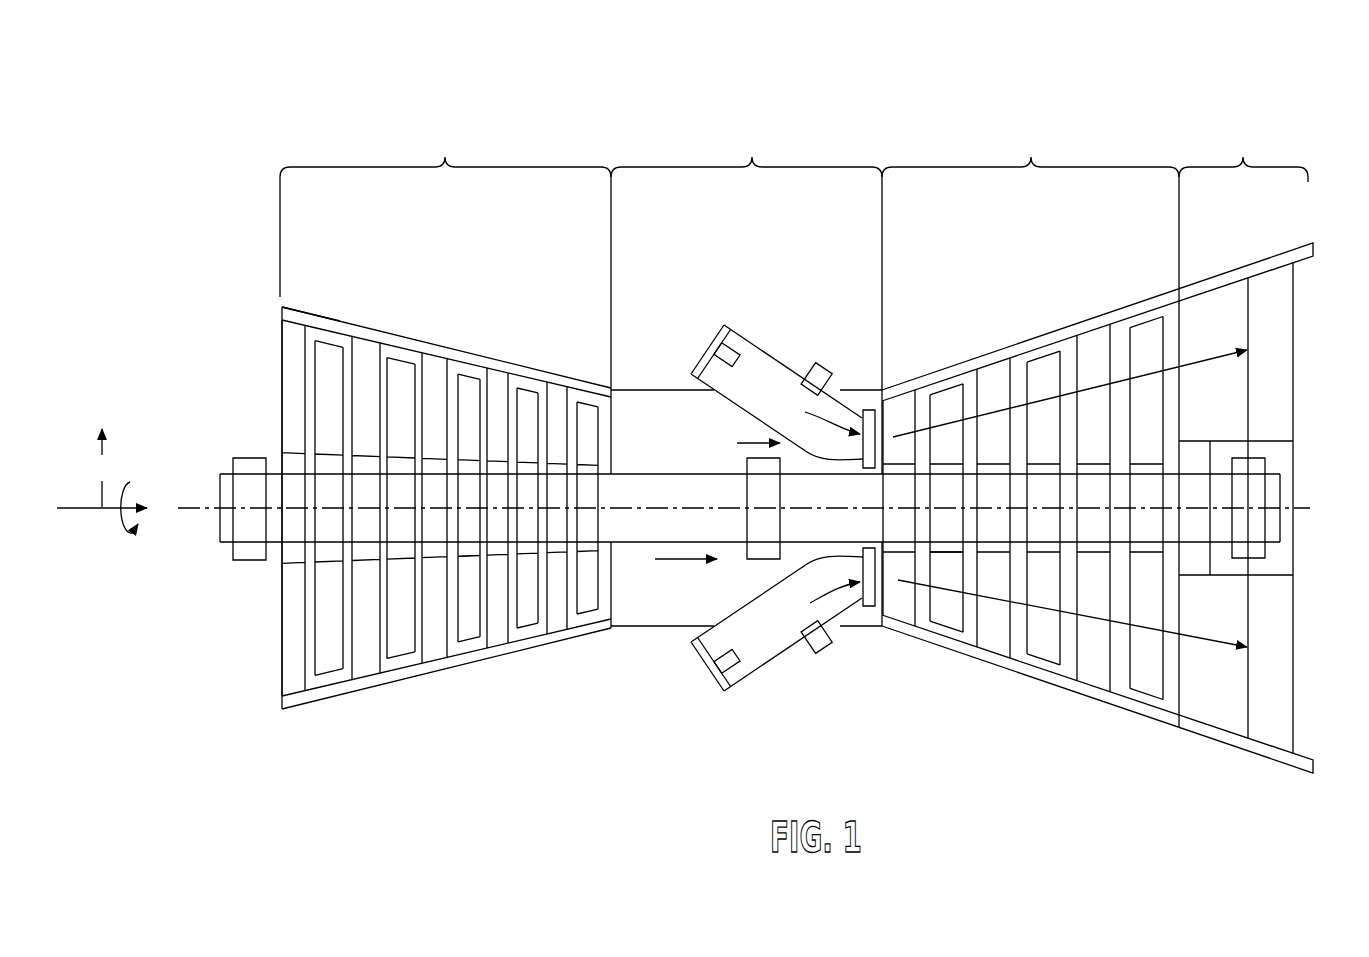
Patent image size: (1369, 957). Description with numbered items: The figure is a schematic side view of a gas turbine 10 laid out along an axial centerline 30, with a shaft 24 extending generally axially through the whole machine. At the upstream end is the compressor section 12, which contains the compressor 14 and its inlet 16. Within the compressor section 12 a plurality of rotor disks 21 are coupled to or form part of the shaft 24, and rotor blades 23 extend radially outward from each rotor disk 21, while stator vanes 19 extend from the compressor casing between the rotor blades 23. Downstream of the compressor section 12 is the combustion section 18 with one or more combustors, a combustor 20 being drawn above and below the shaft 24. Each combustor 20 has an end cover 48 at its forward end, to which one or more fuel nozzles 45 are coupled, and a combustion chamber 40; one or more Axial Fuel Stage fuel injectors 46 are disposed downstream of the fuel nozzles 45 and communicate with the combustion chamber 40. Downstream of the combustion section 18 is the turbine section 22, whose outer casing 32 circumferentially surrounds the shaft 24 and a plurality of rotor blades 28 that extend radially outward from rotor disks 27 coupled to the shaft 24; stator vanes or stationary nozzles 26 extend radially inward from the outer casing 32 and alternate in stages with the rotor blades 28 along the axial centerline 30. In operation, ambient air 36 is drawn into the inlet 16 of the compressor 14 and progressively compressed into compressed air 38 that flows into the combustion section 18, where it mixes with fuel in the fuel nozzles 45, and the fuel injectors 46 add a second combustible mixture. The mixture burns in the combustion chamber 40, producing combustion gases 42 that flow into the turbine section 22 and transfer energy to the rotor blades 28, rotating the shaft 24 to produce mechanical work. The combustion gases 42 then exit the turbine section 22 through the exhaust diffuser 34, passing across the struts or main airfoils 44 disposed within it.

The gas turbine 10 is at (1133, 140).
The compressor section 12 is at (418, 451).
The compressor 14 is at (338, 687).
The inlet 16 is at (280, 365).
The combustion section 18 is at (929, 430).
The stator vanes 19 is at (365, 665).
The combustor 20 is at (745, 338).
The rotor disks 21 is at (468, 550).
The turbine section 22 is at (1097, 449).
The rotor blades 23 is at (463, 633).
The shaft 24 is at (677, 488).
The stator vanes 26 is at (990, 373).
The rotor disks 27 is at (943, 548).
The rotor blades 28 is at (1045, 652).
The axial centerline 30 is at (210, 506).
The outer casing 32 is at (1098, 702).
The exhaust diffuser 34 is at (1270, 436).
The ambient air 36 is at (263, 385).
The compressed air 38 is at (757, 443).
The combustion chamber 40 is at (760, 377).
The combustion gases 42 is at (830, 425).
The struts 44 is at (1278, 338).
The fuel nozzles 45 is at (728, 330).
The fuel injectors 46 is at (826, 370).
The end cover 48 is at (707, 357).